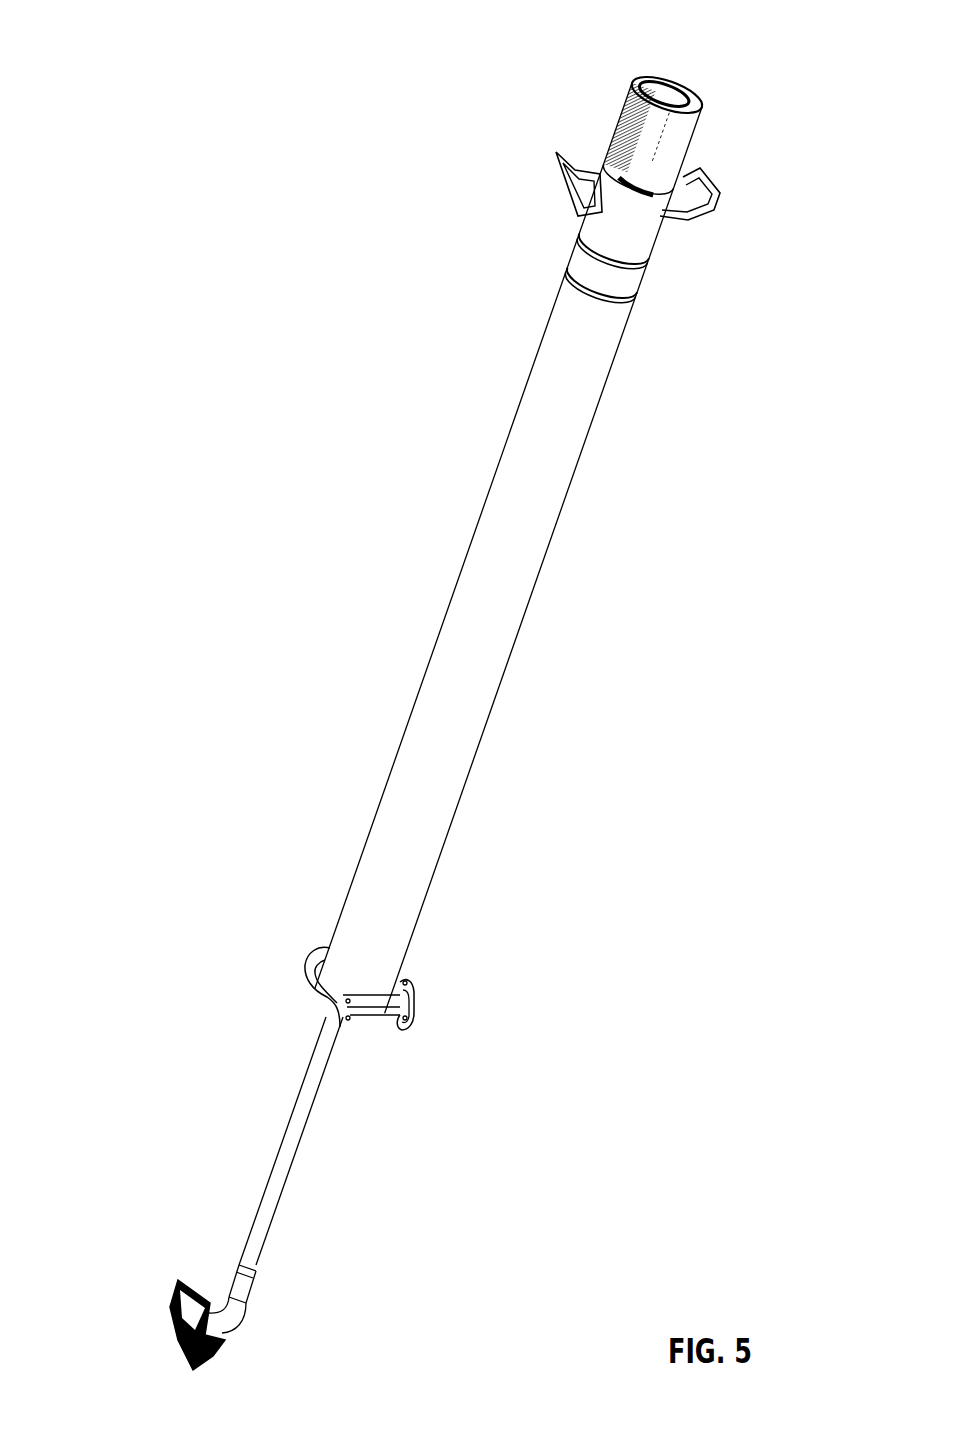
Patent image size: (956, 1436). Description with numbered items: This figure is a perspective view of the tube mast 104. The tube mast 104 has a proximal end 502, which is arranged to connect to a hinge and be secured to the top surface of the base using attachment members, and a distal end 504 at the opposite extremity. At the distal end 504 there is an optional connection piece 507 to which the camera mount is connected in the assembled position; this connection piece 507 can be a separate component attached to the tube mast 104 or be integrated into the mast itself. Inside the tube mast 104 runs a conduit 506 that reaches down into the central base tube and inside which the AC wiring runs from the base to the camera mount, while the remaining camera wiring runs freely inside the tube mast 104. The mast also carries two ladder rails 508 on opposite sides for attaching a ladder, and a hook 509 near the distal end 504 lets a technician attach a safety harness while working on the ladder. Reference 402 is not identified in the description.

The tube mast 104 is at (142, 190).
The mounting bracket 402 is at (170, 1317).
The proximal end 502 is at (412, 1030).
The distal end 504 is at (694, 59).
The conduit 506 is at (323, 1057).
The connection piece 507 is at (607, 140).
The ladder rails 508 is at (710, 200).
The hook 509 is at (643, 203).